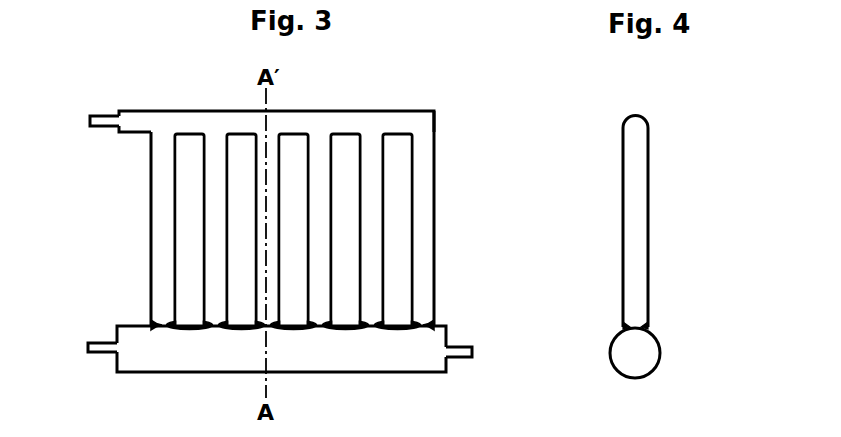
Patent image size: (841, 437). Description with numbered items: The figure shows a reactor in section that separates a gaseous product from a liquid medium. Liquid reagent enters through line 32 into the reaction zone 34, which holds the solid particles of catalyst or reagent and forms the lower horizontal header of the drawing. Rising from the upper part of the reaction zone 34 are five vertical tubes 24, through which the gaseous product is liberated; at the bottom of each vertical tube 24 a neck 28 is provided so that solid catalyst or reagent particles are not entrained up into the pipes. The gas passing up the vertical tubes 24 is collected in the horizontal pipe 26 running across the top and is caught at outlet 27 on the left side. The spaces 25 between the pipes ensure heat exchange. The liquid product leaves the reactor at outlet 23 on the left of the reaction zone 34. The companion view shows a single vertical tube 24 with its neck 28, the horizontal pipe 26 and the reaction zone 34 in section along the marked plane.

In FIG. 3, the liquid product outlet 23 is at (88, 346).
In FIG. 3, the vertical tubes 24 is at (423, 197).
In FIG. 4, the vertical tubes 24 is at (638, 232).
In FIG. 3, the spaces 25 is at (397, 163).
In FIG. 3, the horizontal pipe 26 is at (298, 119).
In FIG. 4, the horizontal pipe 26 is at (637, 128).
In FIG. 3, the gas outlet 27 is at (91, 121).
In FIG. 3, the necks 28 is at (424, 322).
In FIG. 4, the necks 28 is at (635, 326).
In FIG. 3, the line 32 is at (466, 352).
In FIG. 3, the reaction zone 34 is at (228, 362).
In FIG. 4, the reaction zone 34 is at (645, 357).